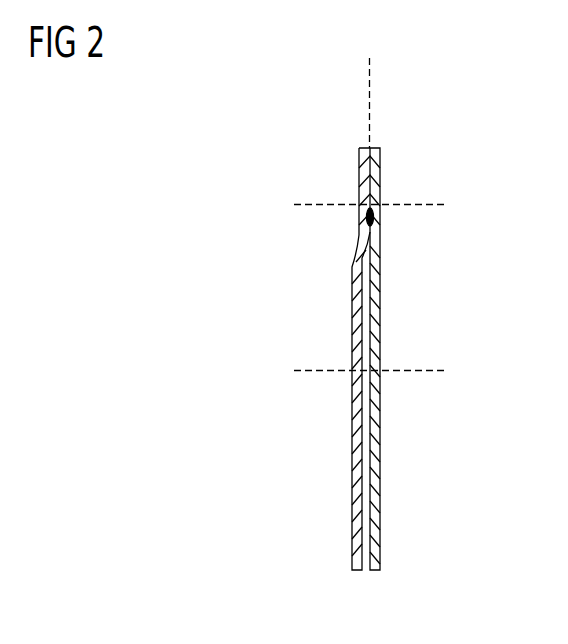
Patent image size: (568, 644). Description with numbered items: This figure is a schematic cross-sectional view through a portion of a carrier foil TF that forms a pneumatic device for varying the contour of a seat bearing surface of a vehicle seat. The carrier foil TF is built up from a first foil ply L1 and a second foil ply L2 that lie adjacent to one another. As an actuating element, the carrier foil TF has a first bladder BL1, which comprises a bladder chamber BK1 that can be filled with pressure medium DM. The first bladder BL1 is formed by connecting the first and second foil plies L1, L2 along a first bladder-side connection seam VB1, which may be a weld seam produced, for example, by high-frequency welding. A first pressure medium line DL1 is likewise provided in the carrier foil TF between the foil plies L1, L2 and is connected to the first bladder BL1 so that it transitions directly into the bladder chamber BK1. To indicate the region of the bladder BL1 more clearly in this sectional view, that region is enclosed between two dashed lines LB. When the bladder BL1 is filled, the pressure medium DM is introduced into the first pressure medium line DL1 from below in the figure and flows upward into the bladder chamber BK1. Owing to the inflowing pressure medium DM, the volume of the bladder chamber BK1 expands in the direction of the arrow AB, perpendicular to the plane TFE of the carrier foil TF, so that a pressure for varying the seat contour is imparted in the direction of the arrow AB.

The plane of the carrier foil TFE is at (371, 71).
The carrier foil TF is at (382, 167).
The dashed lines LB is at (295, 203).
The first bladder-side connection seam VB1 is at (376, 213).
The arrow AB is at (337, 303).
The bladder chamber BK1 is at (365, 290).
The first bladder BL1 is at (368, 325).
The first foil ply L1 is at (377, 403).
The second foil ply L2 is at (358, 497).
The first pressure medium line DL1 is at (368, 497).
The pressure medium DM is at (366, 572).